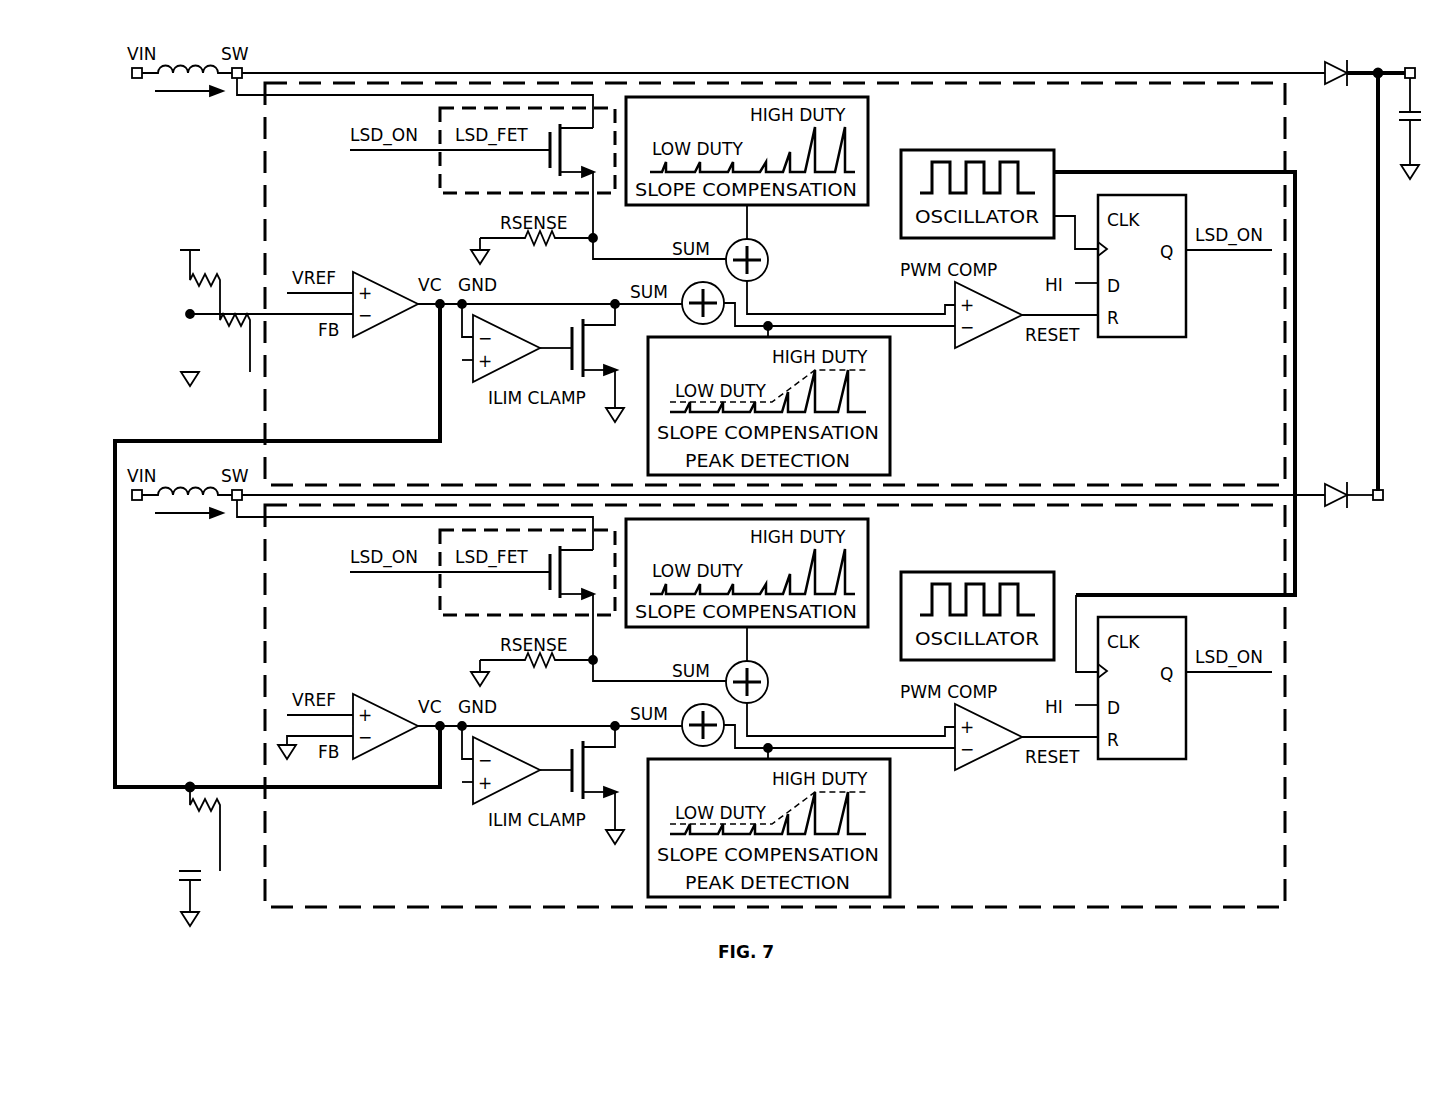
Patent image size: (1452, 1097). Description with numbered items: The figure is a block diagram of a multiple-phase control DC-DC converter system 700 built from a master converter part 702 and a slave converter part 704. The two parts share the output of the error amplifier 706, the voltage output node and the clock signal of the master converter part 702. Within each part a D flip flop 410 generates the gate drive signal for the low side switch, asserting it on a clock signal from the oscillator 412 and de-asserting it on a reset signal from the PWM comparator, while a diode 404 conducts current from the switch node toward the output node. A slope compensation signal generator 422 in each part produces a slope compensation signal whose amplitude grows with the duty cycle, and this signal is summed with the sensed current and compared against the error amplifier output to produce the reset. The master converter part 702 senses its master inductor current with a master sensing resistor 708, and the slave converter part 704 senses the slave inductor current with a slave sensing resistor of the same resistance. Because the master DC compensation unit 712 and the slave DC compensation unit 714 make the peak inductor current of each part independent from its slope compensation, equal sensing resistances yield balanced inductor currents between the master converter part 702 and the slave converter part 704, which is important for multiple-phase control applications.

The multiple-phase control DC-DC converter system 700 is at (775, 503).
The master converter part 702 is at (254, 208).
The slave converter part 704 is at (254, 630).
The error amplifier 706 is at (388, 326).
The master sensing resistor 708 is at (541, 245).
The flip-flop 410 is at (1140, 337).
The oscillator 412 is at (975, 150).
The slope compensation circuit 422 is at (868, 118).
The diode 404 is at (1338, 84).
The master DC compensation unit 712 is at (890, 408).
The slave DC compensation unit 714 is at (890, 830).